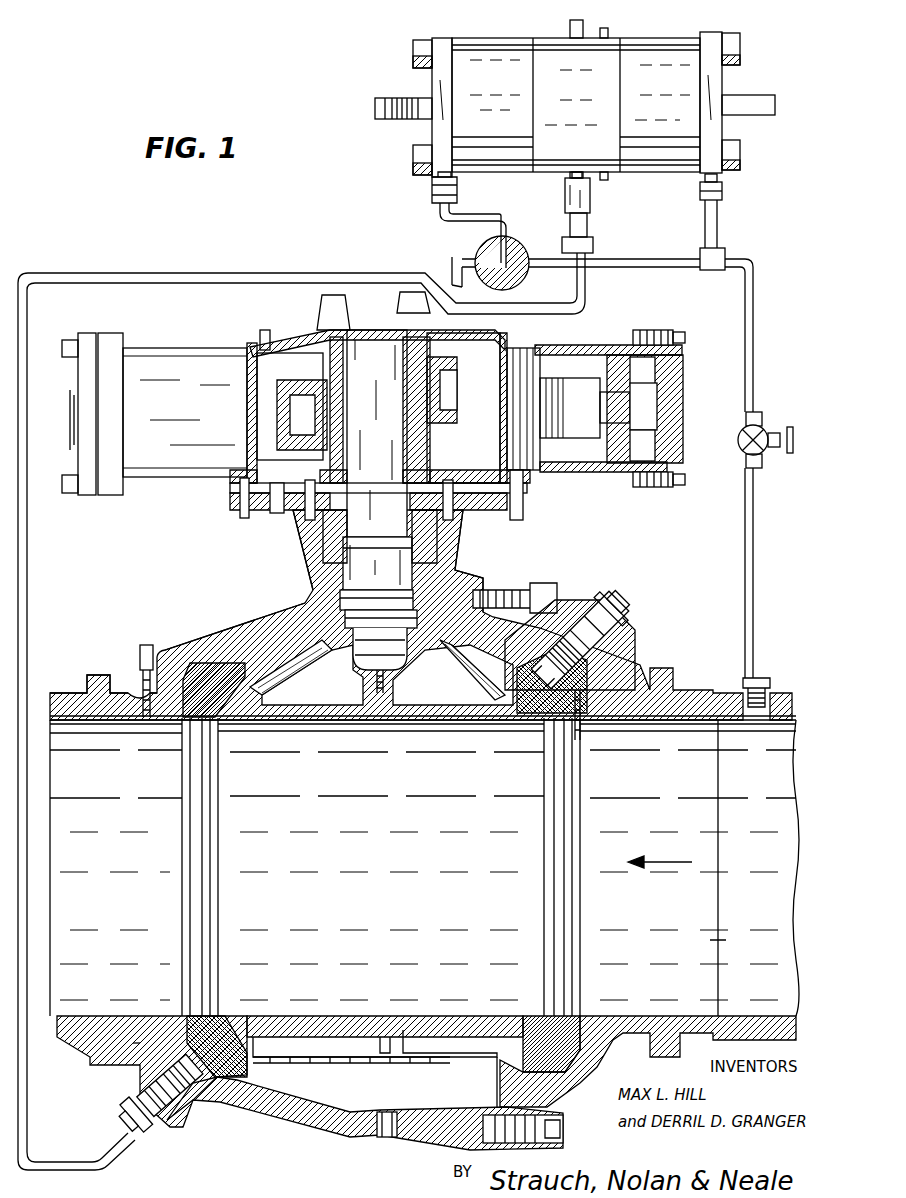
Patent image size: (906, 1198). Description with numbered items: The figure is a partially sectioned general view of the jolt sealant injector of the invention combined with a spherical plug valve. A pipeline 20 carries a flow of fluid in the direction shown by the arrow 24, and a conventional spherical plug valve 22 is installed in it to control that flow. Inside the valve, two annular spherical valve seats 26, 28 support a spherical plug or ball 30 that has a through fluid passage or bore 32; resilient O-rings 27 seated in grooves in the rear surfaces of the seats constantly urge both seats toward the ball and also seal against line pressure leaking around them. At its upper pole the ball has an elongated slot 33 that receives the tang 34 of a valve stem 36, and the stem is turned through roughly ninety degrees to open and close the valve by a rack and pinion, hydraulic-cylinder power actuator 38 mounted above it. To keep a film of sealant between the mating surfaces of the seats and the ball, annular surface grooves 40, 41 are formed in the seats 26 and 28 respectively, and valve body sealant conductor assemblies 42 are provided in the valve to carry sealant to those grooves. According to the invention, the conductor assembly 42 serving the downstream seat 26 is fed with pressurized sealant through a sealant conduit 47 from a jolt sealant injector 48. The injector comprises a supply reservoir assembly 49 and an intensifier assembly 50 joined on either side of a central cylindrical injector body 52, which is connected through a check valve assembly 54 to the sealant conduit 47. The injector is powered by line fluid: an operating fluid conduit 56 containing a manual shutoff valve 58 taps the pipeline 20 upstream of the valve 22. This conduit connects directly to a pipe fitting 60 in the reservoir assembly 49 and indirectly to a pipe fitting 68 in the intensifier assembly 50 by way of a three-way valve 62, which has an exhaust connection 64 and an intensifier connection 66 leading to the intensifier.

The pipeline 20 is at (766, 688).
The spherical plug valve 22 is at (203, 637).
The arrow 24 is at (680, 866).
The annular spherical valve seat 26 is at (232, 668).
The resilient O-rings 27 is at (183, 690).
The annular spherical valve seat 28 is at (548, 648).
The spherical plug or ball 30 is at (327, 642).
The through fluid passage or bore 32 is at (338, 1017).
The elongated slot 33 is at (403, 643).
The tang 34 is at (365, 648).
The valve stem 36 is at (320, 360).
The rack and pinion hydraulic-cylinder power actuator 38 is at (250, 347).
The annular surface groove 40 is at (240, 1020).
The annular surface groove 41 is at (543, 1023).
The valve body sealant conductor assemblies 42 is at (590, 645).
The sealant conduit 47 is at (70, 272).
The jolt sealant injector 48 is at (385, 80).
The supply reservoir assembly 49 is at (715, 35).
The intensifier assembly 50 is at (437, 37).
The central cylindrical injector body 52 is at (592, 96).
The check valve assembly 54 is at (590, 203).
The operating fluid conduit 56 is at (717, 232).
The manual shutoff valve 58 is at (763, 460).
The pipe fitting 60 is at (722, 191).
The three-way valve 62 is at (484, 248).
The exhaust connection 64 is at (452, 260).
The intensifier connection 66 is at (478, 232).
The pipe fitting 68 is at (432, 190).